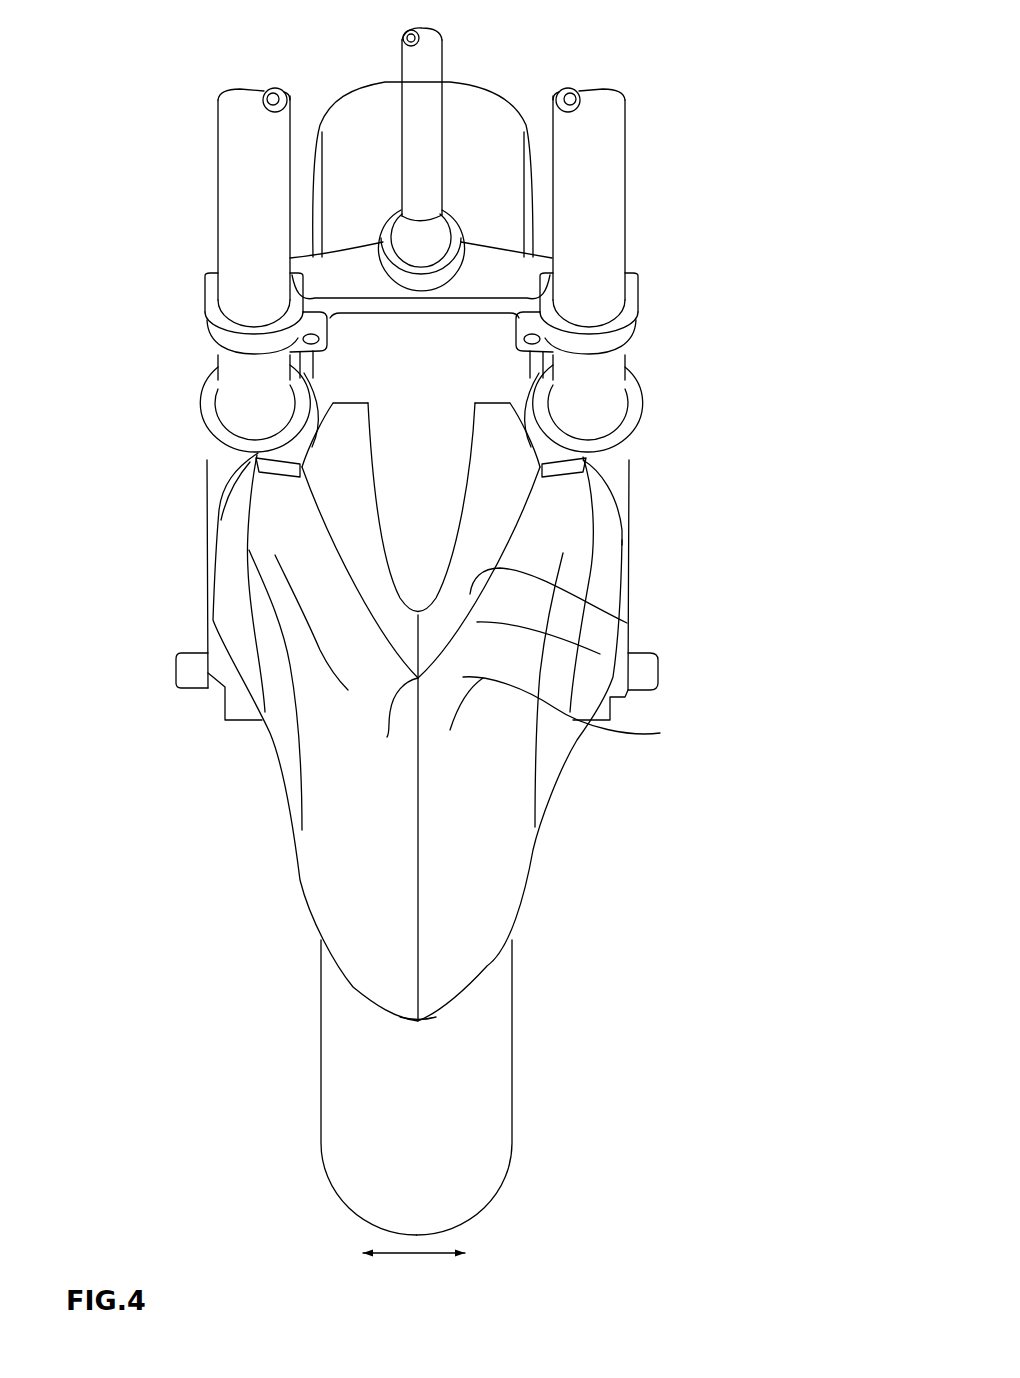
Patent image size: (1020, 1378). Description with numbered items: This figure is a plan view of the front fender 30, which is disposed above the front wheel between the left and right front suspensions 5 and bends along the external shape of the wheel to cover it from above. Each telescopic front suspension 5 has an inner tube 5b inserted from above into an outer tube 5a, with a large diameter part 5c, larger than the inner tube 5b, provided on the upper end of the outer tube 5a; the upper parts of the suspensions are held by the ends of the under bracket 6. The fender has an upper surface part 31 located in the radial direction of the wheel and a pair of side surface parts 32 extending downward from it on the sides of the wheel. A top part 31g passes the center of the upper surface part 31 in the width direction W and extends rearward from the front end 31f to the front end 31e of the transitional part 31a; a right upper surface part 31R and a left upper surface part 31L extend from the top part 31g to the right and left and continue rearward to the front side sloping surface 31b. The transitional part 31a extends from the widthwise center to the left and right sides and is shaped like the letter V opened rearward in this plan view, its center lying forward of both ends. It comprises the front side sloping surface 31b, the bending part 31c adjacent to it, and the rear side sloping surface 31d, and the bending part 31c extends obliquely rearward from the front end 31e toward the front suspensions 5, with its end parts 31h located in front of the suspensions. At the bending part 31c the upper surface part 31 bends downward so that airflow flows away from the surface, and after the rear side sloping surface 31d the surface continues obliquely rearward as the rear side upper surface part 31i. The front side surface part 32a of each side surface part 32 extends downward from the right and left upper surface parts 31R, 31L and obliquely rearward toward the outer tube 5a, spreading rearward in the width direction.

The front suspension 5 is at (206, 199).
The outer tube 5a is at (210, 547).
The inner tube 5b is at (218, 257).
The large diameter part 5c is at (205, 418).
The under bracket 6 is at (489, 240).
The front fender 30 is at (265, 853).
The upper surface part 31 is at (292, 888).
The left upper surface part 31L is at (353, 952).
The right upper surface part 31R is at (473, 965).
The transitional part 31a is at (628, 658).
The front side sloping surface 31b is at (593, 710).
The bending part 31c is at (600, 654).
The rear side sloping surface 31d is at (627, 623).
The front end of transitional part 31e is at (383, 737).
The front end 31f is at (416, 1023).
The top part 31g is at (420, 834).
The end parts 31h is at (250, 462).
The rear side upper surface part 31i is at (463, 110).
The side surface parts 32 is at (198, 574).
The front side surface part 32a is at (216, 600).
The width direction W is at (415, 1258).